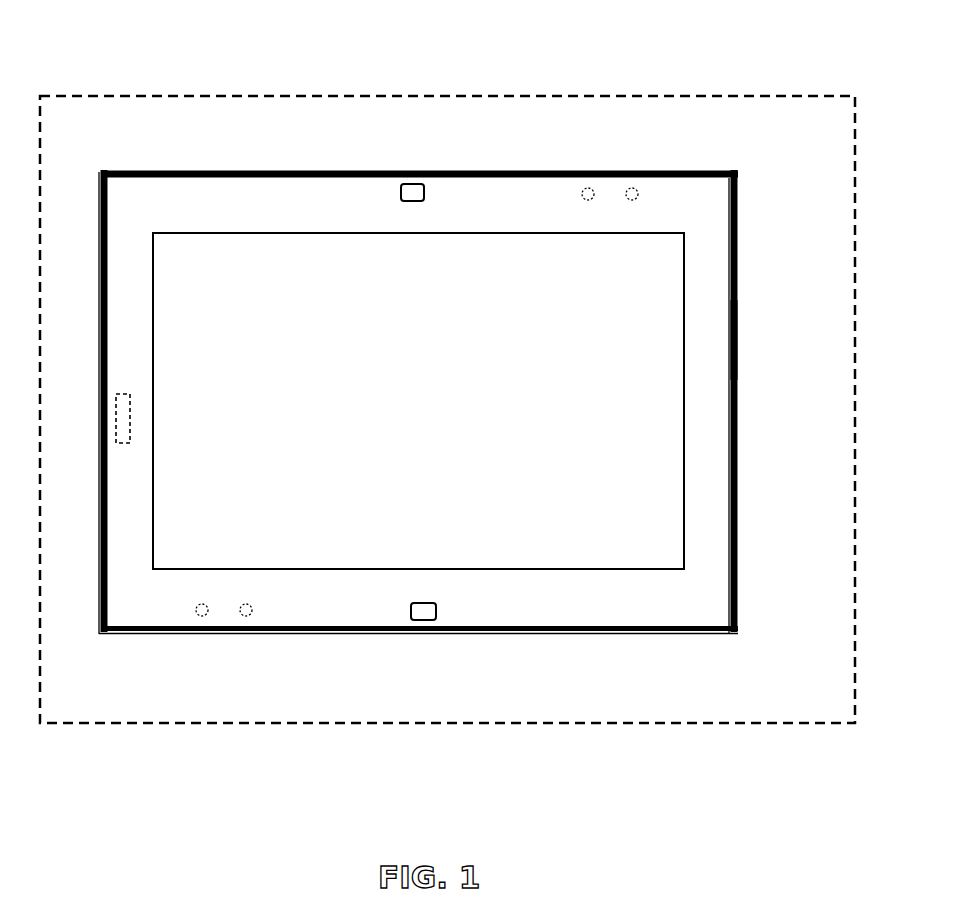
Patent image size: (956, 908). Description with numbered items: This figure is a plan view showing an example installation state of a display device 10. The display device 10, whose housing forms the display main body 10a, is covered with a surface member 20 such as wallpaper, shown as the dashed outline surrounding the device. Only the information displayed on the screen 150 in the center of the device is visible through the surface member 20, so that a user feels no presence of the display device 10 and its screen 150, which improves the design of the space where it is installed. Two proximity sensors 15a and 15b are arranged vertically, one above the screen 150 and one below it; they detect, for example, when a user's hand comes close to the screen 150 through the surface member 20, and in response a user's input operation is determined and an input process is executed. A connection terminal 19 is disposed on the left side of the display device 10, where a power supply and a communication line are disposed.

The display device 10 is at (750, 191).
The display main body 10a is at (735, 344).
The screen 150 is at (443, 406).
The proximity sensor 15a is at (412, 194).
The proximity sensor 15b is at (421, 612).
The connection terminal 19 is at (112, 403).
The surface member 20 is at (663, 95).